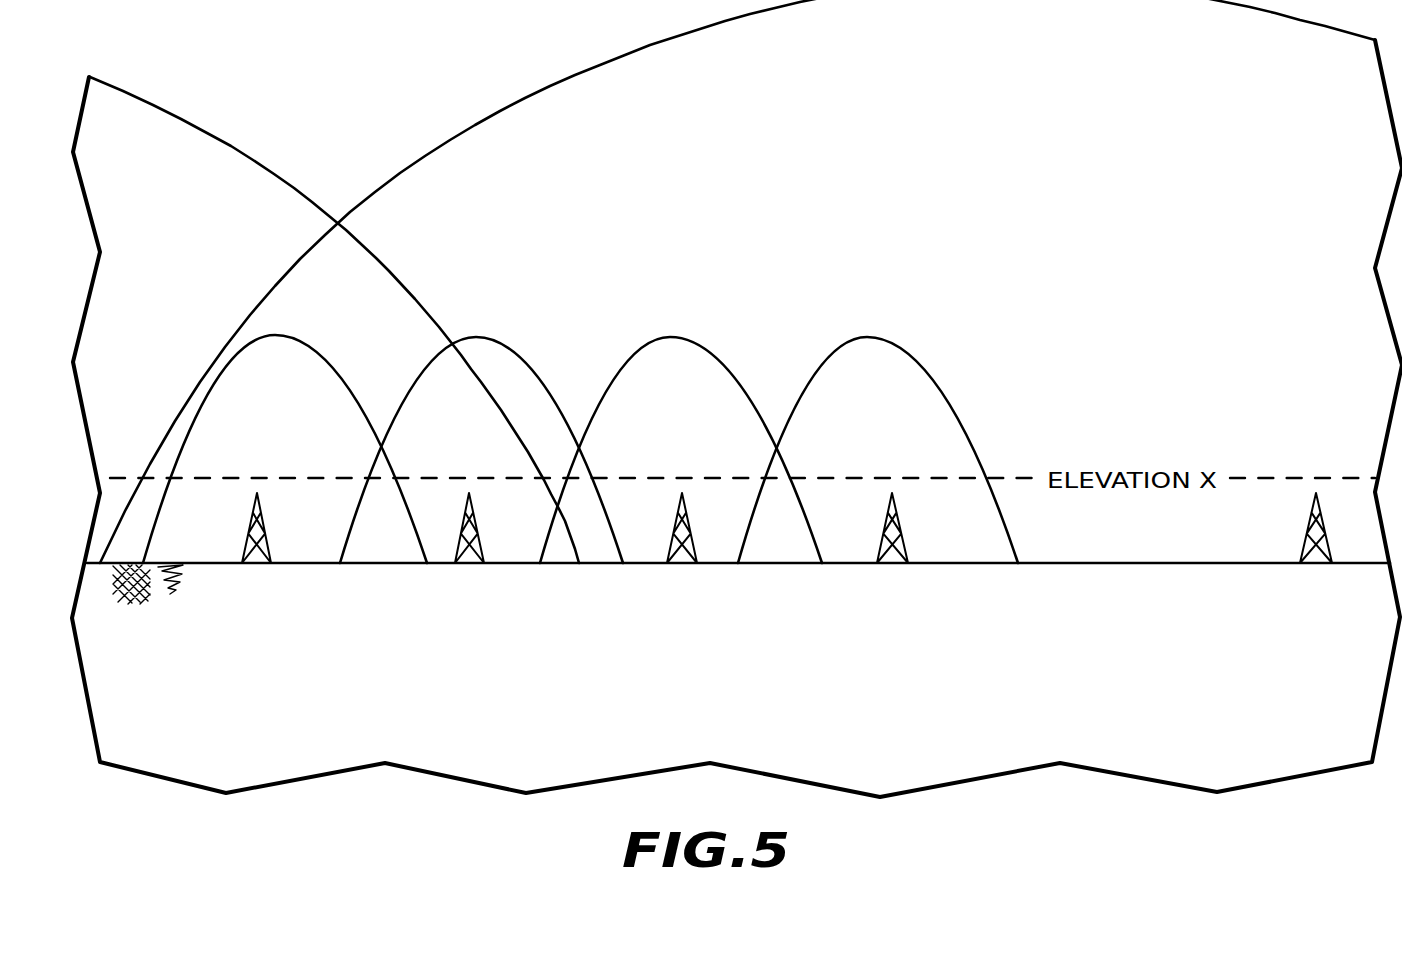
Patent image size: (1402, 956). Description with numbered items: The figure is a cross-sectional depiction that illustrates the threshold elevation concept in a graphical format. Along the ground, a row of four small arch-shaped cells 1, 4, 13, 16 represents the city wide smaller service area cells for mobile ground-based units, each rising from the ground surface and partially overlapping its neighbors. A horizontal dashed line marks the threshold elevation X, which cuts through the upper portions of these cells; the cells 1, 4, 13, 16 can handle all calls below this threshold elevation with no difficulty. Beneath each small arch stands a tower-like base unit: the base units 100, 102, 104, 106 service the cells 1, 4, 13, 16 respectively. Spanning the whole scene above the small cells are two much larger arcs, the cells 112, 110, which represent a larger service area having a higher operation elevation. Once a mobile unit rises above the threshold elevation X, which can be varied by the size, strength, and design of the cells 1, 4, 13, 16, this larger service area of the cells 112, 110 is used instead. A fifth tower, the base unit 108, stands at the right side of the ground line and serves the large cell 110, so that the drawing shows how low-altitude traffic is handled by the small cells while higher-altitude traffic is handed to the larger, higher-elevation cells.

The cell 110 is at (1066, 222).
The cell 112 is at (190, 252).
The cell 1 is at (285, 395).
The cell 4 is at (470, 408).
The cell 13 is at (685, 394).
The cell 16 is at (878, 394).
The base unit 100 is at (263, 517).
The base unit 102 is at (462, 527).
The base unit 104 is at (675, 537).
The base unit 106 is at (883, 528).
The base unit 108 is at (1307, 535).